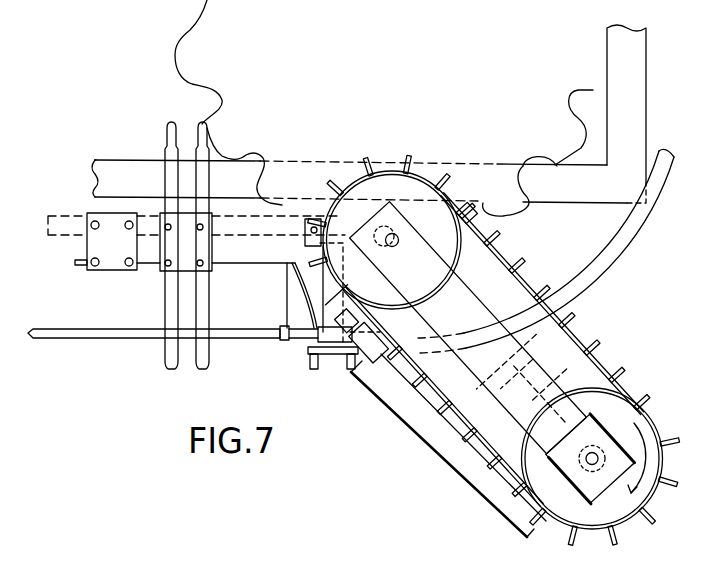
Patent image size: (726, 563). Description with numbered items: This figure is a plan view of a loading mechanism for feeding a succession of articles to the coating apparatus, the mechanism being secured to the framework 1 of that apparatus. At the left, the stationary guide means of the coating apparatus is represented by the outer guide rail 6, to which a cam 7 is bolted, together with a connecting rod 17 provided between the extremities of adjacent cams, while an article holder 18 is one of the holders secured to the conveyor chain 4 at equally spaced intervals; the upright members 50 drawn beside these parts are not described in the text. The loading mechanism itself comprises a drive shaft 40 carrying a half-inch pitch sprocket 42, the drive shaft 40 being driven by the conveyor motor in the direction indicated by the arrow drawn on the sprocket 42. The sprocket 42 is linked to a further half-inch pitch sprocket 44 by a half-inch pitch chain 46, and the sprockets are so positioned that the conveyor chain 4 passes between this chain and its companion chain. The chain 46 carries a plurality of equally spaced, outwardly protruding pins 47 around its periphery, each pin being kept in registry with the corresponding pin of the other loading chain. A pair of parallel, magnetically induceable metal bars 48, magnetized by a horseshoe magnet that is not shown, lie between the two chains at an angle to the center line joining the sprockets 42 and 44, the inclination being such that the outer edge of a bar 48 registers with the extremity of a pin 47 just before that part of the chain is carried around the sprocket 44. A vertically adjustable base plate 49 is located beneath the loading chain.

The framework 1 is at (123, 168).
The article holder 18 is at (108, 228).
The chain 4 is at (53, 232).
The posts / supports 50 is at (166, 370).
The connecting rod 17 is at (247, 266).
The outer guide rail 6 is at (100, 339).
The cam 7 is at (300, 328).
The sprocket 44 is at (418, 190).
The second sprocket 42 is at (634, 432).
The chain 46 is at (617, 362).
The pins 47 is at (580, 316).
The magnetically induceable metal bars 48 is at (397, 370).
The base plate 49 is at (425, 440).
The drive shaft 40 is at (598, 463).